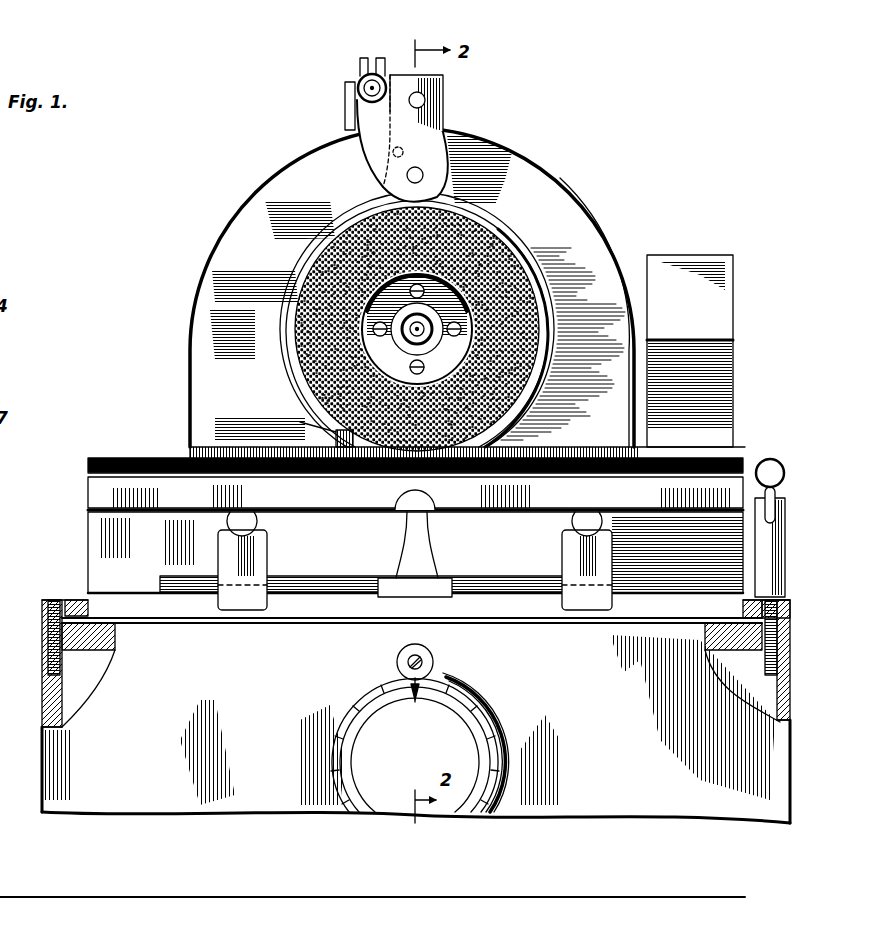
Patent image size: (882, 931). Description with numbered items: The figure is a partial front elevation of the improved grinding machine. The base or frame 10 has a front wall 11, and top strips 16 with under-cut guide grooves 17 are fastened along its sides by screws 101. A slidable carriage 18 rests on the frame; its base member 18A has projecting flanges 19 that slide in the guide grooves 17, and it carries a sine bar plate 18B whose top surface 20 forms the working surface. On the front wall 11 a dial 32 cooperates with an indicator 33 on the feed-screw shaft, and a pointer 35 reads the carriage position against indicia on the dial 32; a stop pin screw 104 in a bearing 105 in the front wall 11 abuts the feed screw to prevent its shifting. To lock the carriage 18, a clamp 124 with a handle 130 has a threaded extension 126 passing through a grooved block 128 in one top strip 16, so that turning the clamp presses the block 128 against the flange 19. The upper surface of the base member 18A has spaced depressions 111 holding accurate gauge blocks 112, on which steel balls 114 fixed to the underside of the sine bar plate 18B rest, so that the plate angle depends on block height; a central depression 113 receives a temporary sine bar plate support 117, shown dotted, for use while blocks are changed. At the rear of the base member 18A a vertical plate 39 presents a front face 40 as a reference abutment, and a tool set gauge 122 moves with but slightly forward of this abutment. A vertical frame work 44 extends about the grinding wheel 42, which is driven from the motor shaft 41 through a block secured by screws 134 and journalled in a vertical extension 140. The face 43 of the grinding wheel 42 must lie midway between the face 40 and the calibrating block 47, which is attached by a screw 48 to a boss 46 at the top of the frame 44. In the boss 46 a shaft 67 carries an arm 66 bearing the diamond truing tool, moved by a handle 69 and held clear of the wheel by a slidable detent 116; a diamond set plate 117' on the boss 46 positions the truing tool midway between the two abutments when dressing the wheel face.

The base or frame 10 is at (38, 741).
The front wall 11 is at (650, 781).
The top strips 16 is at (58, 600).
The guide grooves 17 is at (80, 600).
The slidable carriage 18 is at (84, 510).
The base member 18A is at (93, 536).
The sine bar plate 18B is at (96, 489).
The projecting flanges 19 is at (50, 622).
The top surface 20 is at (127, 456).
The dial 32 is at (468, 704).
The indicator 33 is at (440, 736).
The pointer 35 is at (423, 692).
The vertical plate 39 is at (190, 448).
The front face 40 is at (220, 456).
The motor shaft 41 is at (410, 331).
The grinding wheel 42 is at (486, 220).
The face of the grinding wheel 43 is at (360, 402).
The vertical frame work 44 is at (567, 220).
The boss 46 is at (448, 152).
The calibrating block 47 is at (445, 101).
The screw 48 is at (420, 98).
The arm 66 is at (362, 142).
The shaft 67 is at (408, 178).
The handle 69 is at (358, 89).
The screws 101 is at (44, 648).
The stop pin screw 104 is at (423, 663).
The bearing 105 is at (420, 650).
The depressions 111 is at (218, 585).
The gauge blocks 112 is at (218, 548).
The central depression 113 is at (379, 590).
The steel balls 114 is at (228, 524).
The slidable detent 116 is at (393, 156).
The temporary sine bar plate support 117 is at (395, 534).
The diamond set plate 117' is at (323, 106).
The tool set gauge 122 is at (725, 308).
The clamp 124 is at (775, 538).
The threaded extension 126 is at (792, 640).
The grooved block 128 is at (780, 618).
The handle 130 is at (785, 470).
The screws 134 is at (372, 327).
The vertical extension 140 is at (336, 437).